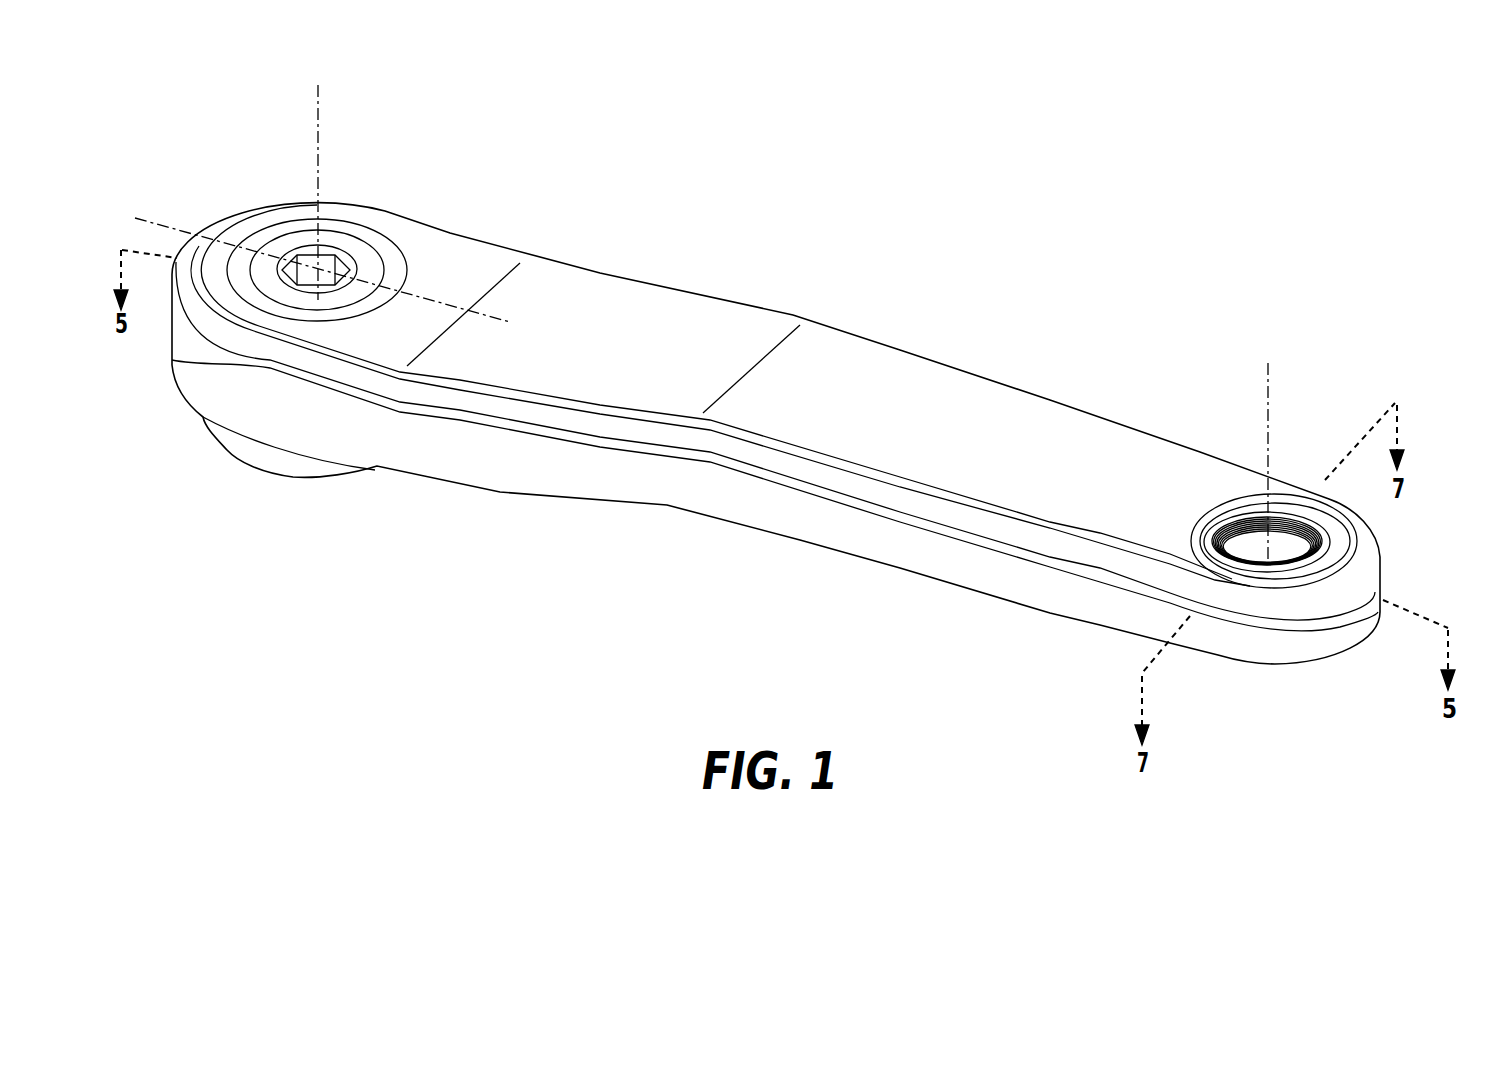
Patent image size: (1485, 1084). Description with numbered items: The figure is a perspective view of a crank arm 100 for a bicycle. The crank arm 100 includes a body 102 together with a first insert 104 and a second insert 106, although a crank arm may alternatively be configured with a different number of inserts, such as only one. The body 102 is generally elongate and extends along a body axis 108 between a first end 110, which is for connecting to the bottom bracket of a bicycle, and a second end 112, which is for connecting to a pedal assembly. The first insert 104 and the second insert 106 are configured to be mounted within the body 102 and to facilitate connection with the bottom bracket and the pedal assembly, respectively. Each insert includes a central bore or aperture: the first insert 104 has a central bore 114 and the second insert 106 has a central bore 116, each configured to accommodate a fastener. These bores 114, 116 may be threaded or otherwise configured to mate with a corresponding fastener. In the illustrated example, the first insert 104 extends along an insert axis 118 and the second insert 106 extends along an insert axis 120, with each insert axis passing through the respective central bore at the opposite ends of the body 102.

The crank arm 100 is at (890, 194).
The body 102 is at (1067, 422).
The first insert 104 is at (256, 322).
The second insert 106 is at (1200, 573).
The body axis 108 is at (142, 224).
The first end 110 is at (285, 176).
The second end 112 is at (1285, 682).
The central bore 114 is at (334, 240).
The central bore 116 is at (1278, 488).
The insert axis 118 is at (319, 152).
The insert axis 120 is at (1270, 403).